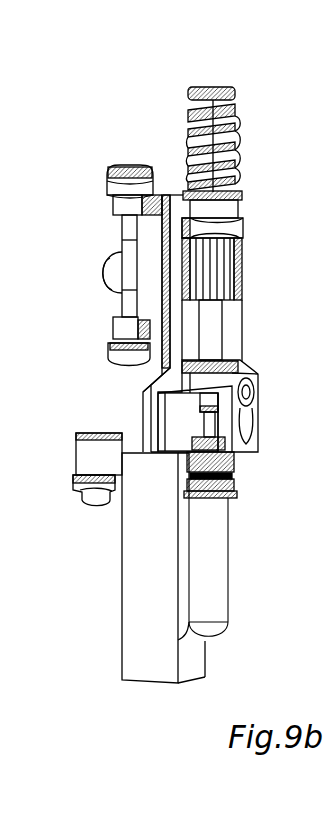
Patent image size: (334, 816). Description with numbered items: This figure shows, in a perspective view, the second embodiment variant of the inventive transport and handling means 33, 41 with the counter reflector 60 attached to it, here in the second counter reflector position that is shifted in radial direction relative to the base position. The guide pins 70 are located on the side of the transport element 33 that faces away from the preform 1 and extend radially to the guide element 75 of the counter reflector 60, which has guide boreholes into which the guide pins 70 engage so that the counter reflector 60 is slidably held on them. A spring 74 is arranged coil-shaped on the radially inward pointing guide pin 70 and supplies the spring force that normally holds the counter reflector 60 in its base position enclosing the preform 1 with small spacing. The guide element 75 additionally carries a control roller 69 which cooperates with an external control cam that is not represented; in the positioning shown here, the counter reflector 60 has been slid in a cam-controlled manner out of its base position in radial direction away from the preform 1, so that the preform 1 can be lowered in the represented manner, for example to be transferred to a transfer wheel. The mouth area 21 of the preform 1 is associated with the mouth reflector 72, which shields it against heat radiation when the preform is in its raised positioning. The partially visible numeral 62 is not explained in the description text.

The preform 1 is at (215, 541).
The mouth area 21 is at (234, 476).
The transport element 33 is at (82, 236).
The transport and handling means 41 is at (322, 81).
The counter reflector 60 is at (132, 601).
The element 62 is at (9, 390).
The control roller 69 is at (90, 490).
The guide pin 70 is at (136, 447).
The mouth reflector 72 is at (253, 423).
The spring 74 is at (138, 447).
The guide element 75 is at (88, 458).